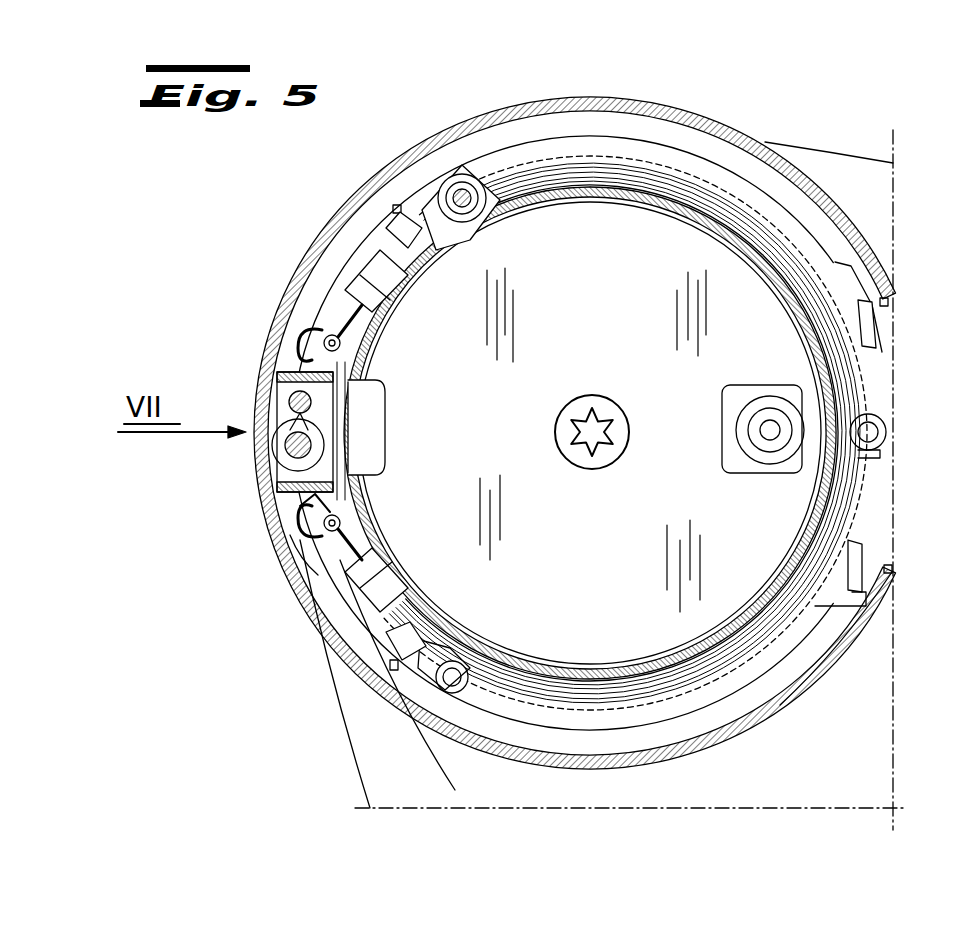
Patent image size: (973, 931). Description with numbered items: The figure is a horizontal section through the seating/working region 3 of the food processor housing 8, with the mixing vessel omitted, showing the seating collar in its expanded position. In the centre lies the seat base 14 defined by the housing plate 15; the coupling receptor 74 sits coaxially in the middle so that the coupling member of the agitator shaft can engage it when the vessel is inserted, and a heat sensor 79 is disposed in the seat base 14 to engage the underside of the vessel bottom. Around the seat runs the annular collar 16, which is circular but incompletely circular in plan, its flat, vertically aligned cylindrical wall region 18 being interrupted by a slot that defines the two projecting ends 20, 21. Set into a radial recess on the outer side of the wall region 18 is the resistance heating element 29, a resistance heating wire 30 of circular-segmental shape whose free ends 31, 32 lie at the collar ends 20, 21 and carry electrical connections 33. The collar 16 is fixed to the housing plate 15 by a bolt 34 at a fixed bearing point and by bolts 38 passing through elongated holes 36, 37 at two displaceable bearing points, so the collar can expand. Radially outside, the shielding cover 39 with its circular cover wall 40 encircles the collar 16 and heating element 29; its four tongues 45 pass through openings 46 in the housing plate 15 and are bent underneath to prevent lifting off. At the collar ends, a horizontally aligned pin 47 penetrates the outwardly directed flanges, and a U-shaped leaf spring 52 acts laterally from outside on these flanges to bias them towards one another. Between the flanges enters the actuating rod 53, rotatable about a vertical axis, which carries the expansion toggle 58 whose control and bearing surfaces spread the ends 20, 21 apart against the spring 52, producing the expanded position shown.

The seating/working region 3 is at (850, 190).
The housing 8 is at (274, 334).
The seat base 14 is at (757, 305).
The housing plate 15 is at (560, 150).
The collar 16 is at (629, 690).
The cylindrical wall region 18 is at (600, 188).
The projecting end of the collar 20 is at (355, 410).
The projecting end of the collar 21 is at (352, 447).
The resistance heating element 29 is at (757, 652).
The resistance heating wire 30 is at (662, 185).
The free end of the resistance heating wire 31 is at (375, 282).
The free end of the resistance heating wire 32 is at (375, 583).
The electrical connections 33 is at (350, 322).
The bolt 34 is at (875, 430).
The elongated hole 36 is at (440, 205).
The elongated hole 37 is at (438, 668).
The bolts 38 is at (462, 190).
The shielding cover 39 is at (628, 150).
The cover wall 40 is at (795, 620).
The tongues 45 is at (870, 305).
The openings 46 is at (880, 350).
The pin 47 is at (300, 562).
The leaf spring 52 is at (283, 381).
The actuating rod 53 is at (290, 456).
The expansion toggle 58 is at (300, 522).
The coupling receptor 74 is at (618, 412).
The heat sensor 79 is at (772, 428).